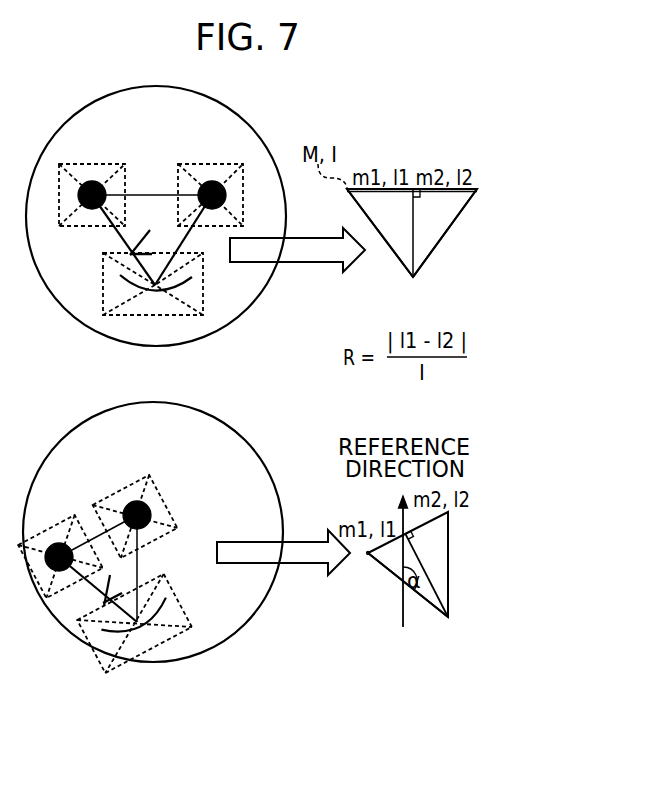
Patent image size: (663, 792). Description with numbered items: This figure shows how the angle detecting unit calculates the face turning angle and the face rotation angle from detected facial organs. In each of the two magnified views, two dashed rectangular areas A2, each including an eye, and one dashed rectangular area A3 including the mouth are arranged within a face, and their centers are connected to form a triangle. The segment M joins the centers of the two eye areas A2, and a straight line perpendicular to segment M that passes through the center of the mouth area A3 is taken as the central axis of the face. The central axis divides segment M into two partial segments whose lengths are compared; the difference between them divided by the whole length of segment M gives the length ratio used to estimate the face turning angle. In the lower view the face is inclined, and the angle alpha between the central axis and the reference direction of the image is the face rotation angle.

The rectangular area including an eye A2 is at (198, 165).
The rectangular area including the mouth A3 is at (203, 312).
The segment connecting the eye centers M is at (368, 557).